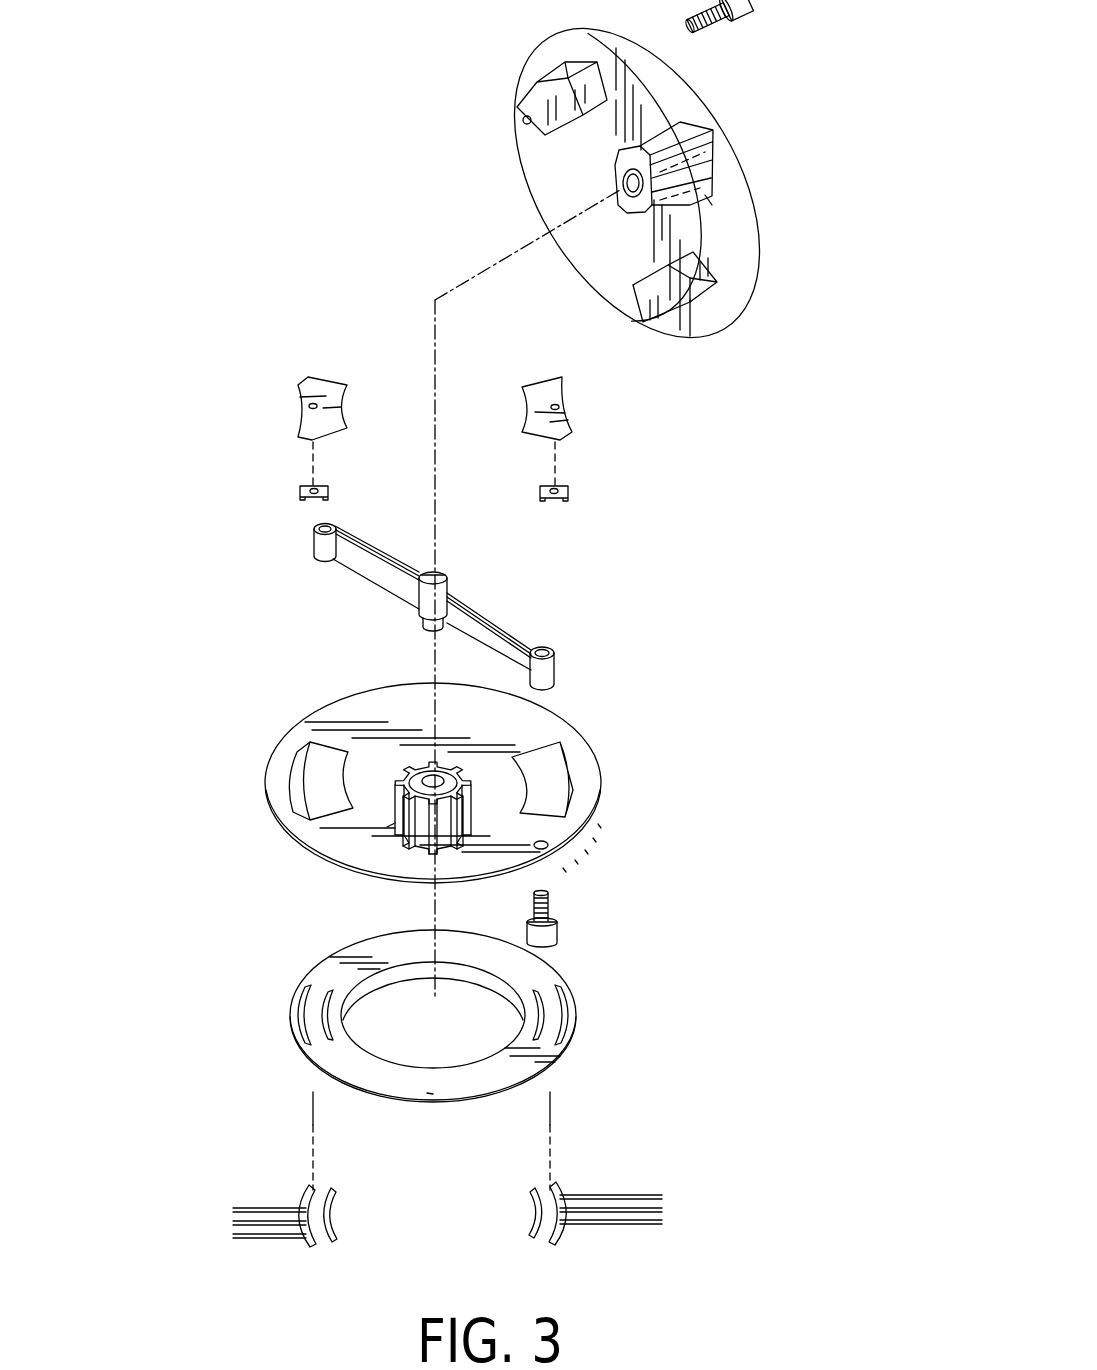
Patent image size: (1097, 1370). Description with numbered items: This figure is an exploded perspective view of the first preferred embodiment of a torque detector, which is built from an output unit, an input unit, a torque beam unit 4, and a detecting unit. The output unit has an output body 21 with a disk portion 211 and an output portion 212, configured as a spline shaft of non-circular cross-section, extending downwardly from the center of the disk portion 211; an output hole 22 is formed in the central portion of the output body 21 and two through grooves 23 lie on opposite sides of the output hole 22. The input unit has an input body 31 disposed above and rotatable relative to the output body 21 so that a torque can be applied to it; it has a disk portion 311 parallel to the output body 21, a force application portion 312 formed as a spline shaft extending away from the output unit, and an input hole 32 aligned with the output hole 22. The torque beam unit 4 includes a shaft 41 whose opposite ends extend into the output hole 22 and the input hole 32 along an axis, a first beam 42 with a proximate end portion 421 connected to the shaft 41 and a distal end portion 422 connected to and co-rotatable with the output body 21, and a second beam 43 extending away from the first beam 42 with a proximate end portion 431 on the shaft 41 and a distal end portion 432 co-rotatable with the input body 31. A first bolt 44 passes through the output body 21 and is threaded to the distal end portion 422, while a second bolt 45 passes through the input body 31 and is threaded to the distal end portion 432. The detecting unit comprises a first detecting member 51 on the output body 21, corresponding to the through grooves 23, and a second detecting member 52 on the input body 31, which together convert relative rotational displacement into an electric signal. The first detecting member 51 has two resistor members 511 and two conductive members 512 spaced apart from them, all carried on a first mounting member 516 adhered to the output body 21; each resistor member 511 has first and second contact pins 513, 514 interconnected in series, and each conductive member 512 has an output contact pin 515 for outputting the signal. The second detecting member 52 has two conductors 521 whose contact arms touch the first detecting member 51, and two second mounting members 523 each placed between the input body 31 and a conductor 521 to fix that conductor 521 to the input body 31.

The torque beam unit 4 is at (415, 576).
The output body 21 is at (453, 798).
The output hole 22 is at (435, 778).
The through grooves 23 is at (312, 780).
The input body 31 is at (660, 190).
The input hole 32 is at (618, 168).
The shaft 41 is at (443, 572).
The first beam 42 is at (505, 605).
The second beam 43 is at (379, 535).
The first bolt 44 is at (557, 938).
The second bolt 45 is at (745, 12).
The first detecting member 51 is at (373, 1059).
The second detecting member 52 is at (425, 394).
The disk portion 211 is at (497, 853).
The output portion 212 is at (387, 827).
The disk portion 311 is at (723, 303).
The force application portion 312 is at (707, 197).
The proximate end portion 421 is at (453, 598).
The distal end portion 422 is at (530, 642).
The proximate end portion 431 is at (412, 570).
The distal end portion 432 is at (336, 560).
The resistor members 511 is at (312, 1245).
The conductive members 512 is at (338, 1210).
The first contact pin 513 is at (657, 1225).
The second contact pin 514 is at (643, 1195).
The output contact pin 515 is at (660, 1210).
The first mounting member 516 is at (427, 1093).
The conductors 521 is at (303, 485).
The second mounting members 523 is at (320, 388).